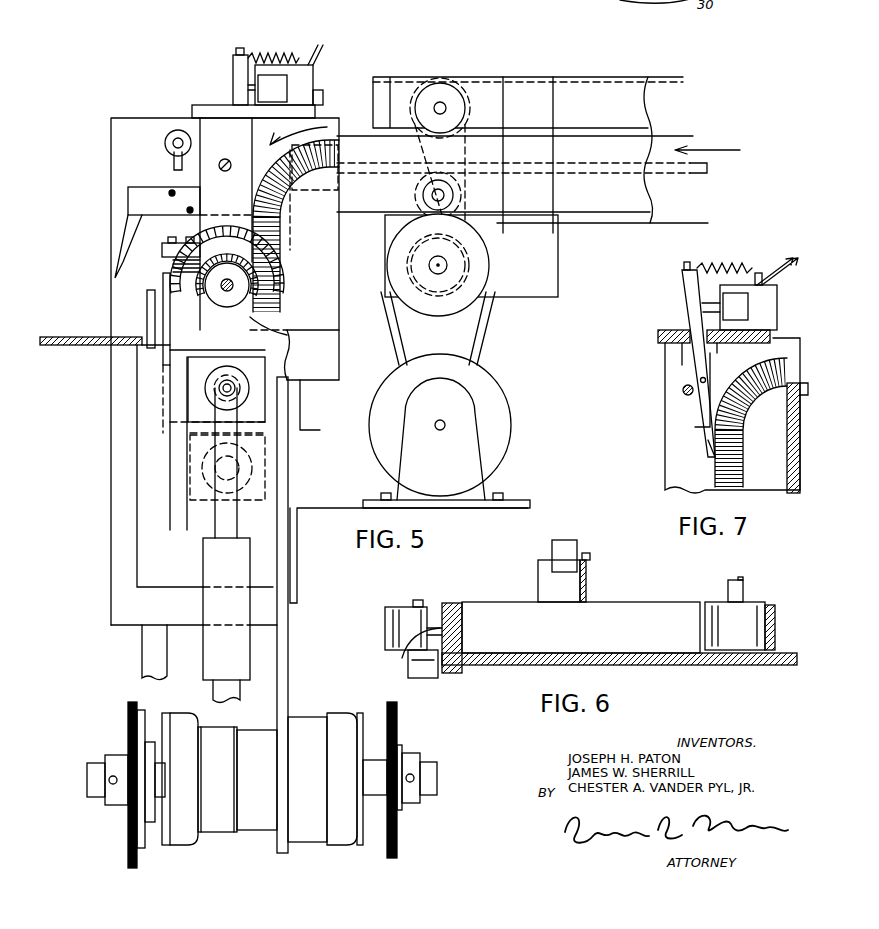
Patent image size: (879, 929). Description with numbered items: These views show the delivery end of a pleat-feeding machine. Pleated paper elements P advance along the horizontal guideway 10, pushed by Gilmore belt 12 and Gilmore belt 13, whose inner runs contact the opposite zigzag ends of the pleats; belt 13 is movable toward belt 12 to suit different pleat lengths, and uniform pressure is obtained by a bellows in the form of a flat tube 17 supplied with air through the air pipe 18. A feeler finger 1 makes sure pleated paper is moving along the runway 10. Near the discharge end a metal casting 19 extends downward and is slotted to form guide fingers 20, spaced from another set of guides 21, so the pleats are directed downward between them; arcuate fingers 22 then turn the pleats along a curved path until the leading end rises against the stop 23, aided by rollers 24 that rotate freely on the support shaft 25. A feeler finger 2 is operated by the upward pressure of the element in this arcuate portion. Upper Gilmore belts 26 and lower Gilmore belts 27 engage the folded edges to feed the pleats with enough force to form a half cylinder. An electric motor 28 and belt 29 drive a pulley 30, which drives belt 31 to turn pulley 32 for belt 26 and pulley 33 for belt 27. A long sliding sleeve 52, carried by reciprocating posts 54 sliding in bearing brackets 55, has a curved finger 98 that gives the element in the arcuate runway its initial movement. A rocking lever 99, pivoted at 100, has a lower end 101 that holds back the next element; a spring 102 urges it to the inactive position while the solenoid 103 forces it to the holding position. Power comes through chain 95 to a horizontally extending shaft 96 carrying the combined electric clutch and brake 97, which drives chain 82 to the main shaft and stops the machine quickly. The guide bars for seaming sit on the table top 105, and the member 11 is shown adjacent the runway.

In FIG. 5, the rocking lever 99 is at (240, 76).
In FIG. 7, the rocking lever 99 is at (690, 305).
In FIG. 5, the guides 21 is at (265, 158).
In FIG. 5, the pleated elements P is at (272, 262).
In FIG. 7, the pleated elements P is at (718, 472).
In FIG. 6, the pleated elements P is at (655, 600).
In FIG. 5, the feeler finger 2 is at (137, 203).
In FIG. 5, the stop 23 is at (165, 251).
In FIG. 5, the rollers 24 is at (212, 275).
In FIG. 5, the support shaft 25 is at (228, 281).
In FIG. 5, the arcuate fingers 22 is at (195, 323).
In FIG. 5, the table top 105 is at (61, 337).
In FIG. 5, the curved finger 98 is at (250, 317).
In FIG. 5, the metal casting 19 is at (338, 313).
In FIG. 5, the sliding sleeve 52 is at (250, 463).
In FIG. 5, the reciprocating posts 54 is at (230, 513).
In FIG. 5, the bearing brackets 55 is at (233, 562).
In FIG. 5, the upper Gilmore belts 26 is at (683, 77).
In FIG. 5, the rail member 11 is at (642, 148).
In FIG. 5, the guideway 10 is at (678, 172).
In FIG. 6, the guideway 10 is at (637, 665).
In FIG. 5, the lower Gilmore belts 27 is at (650, 225).
In FIG. 5, the pulley 32 is at (448, 82).
In FIG. 5, the belt 31 is at (475, 157).
In FIG. 5, the pulley 33 is at (420, 195).
In FIG. 5, the pulley 30 is at (470, 297).
In FIG. 5, the belt 29 is at (480, 349).
In FIG. 5, the electric motor 28 is at (497, 418).
In FIG. 5, the chain 95 is at (128, 853).
In FIG. 5, the combined electric clutch and brake 97 is at (251, 847).
In FIG. 5, the chain 82 is at (399, 722).
In FIG. 5, the horizontally extending shaft 96 is at (428, 770).
In FIG. 7, the guide fingers 20 is at (771, 467).
In FIG. 7, the spring 102 is at (727, 272).
In FIG. 7, the solenoid 103 is at (755, 286).
In FIG. 7, the pivot 100 is at (700, 380).
In FIG. 7, the lower end 101 is at (710, 443).
In FIG. 6, the flat tube 17 is at (445, 601).
In FIG. 6, the Gilmore belt 12 is at (378, 621).
In FIG. 6, the air pipe 18 is at (403, 657).
In FIG. 6, the Gilmore belt 13 is at (769, 623).
In FIG. 6, the feeler finger 1 is at (539, 587).